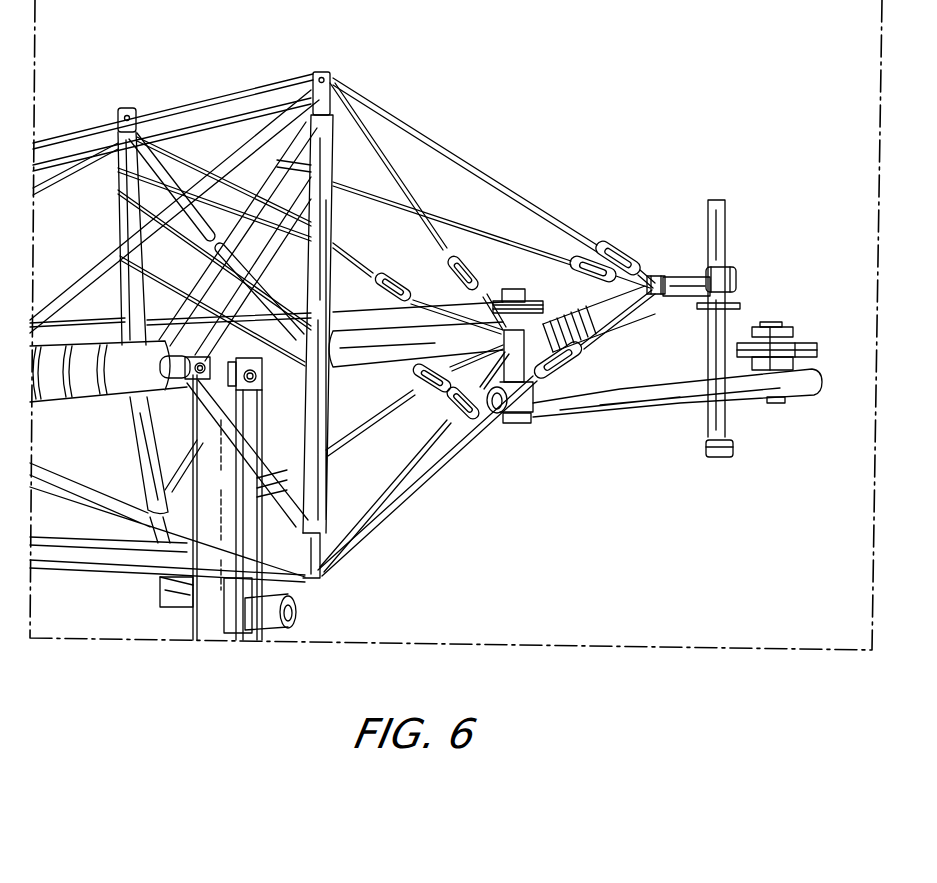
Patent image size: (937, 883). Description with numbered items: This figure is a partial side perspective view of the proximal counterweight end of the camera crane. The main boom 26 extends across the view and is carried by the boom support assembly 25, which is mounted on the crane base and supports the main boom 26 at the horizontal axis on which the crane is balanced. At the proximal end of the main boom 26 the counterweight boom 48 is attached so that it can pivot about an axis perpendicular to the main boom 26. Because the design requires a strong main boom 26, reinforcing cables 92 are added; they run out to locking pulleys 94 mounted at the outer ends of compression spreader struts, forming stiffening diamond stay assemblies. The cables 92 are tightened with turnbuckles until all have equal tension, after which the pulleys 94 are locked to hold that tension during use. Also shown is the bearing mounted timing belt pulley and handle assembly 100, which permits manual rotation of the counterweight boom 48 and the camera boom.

The boom support assembly 25 is at (188, 575).
The main boom 26 is at (115, 403).
The counterweight boom 48 is at (691, 375).
The cable 92 is at (193, 108).
The locking pulley 94 is at (328, 78).
The bearing mounted timing belt pulley and handle assembly 100 is at (730, 324).